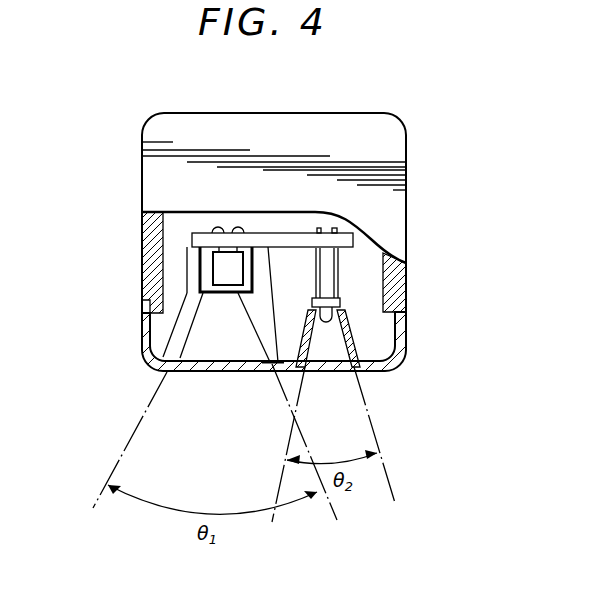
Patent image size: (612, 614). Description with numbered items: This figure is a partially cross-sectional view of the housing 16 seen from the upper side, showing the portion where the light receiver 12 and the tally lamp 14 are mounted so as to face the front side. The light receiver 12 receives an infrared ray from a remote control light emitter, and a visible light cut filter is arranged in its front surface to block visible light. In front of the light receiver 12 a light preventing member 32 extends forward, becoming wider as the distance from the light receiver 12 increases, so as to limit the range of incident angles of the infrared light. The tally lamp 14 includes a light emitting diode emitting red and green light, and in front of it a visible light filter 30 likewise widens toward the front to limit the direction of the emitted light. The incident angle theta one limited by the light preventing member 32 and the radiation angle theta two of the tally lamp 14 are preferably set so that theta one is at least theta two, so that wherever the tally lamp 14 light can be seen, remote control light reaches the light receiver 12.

The light receiver 12 is at (213, 268).
The tally lamp 14 is at (325, 322).
The housing 16 is at (138, 172).
The visible light filter 30 is at (215, 373).
The light preventing member 32 is at (172, 351).